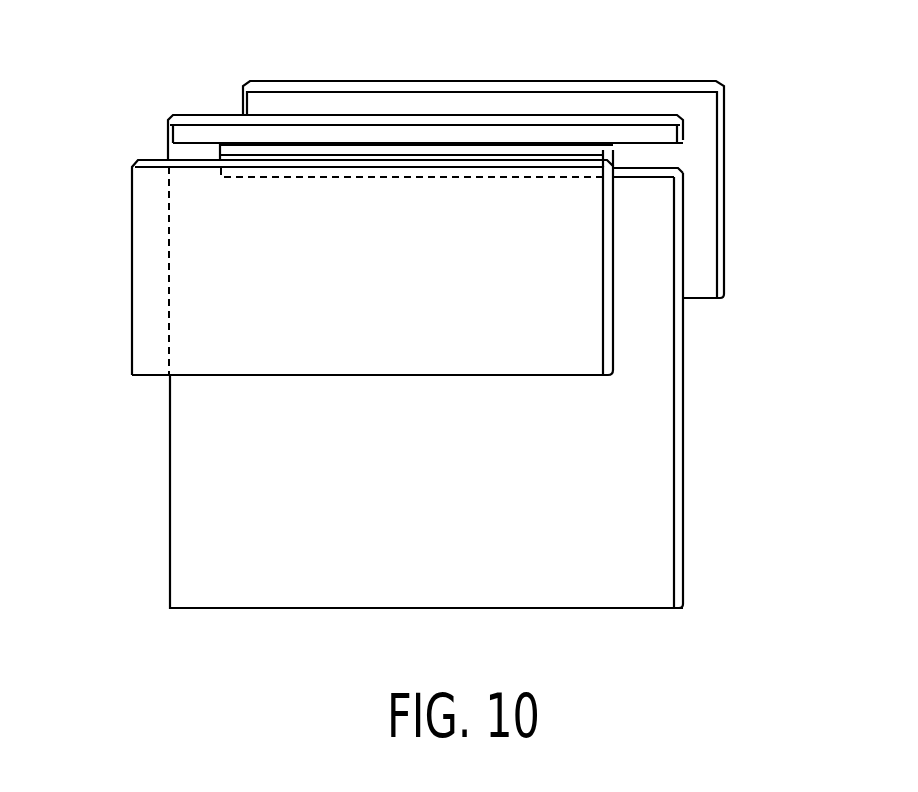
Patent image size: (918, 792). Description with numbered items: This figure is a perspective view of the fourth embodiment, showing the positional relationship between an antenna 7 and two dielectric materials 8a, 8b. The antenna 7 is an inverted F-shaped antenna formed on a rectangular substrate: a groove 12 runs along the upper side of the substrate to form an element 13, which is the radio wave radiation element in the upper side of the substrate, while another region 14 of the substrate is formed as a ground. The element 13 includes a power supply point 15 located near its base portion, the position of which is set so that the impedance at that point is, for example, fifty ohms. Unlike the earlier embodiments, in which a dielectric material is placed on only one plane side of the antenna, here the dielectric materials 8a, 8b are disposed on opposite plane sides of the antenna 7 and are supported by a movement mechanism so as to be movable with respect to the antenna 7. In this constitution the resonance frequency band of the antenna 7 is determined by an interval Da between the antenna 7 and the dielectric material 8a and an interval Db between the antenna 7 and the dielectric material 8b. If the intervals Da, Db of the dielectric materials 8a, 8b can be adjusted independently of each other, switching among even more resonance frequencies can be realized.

The antenna 7 is at (697, 488).
The dielectric material 8a is at (532, 97).
The dielectric material 8b is at (132, 290).
The groove 12 is at (670, 158).
The element 13 is at (668, 131).
The region 14 is at (657, 567).
The power supply point 15 is at (300, 133).
The interval Da is at (617, 282).
The interval Db is at (768, 244).